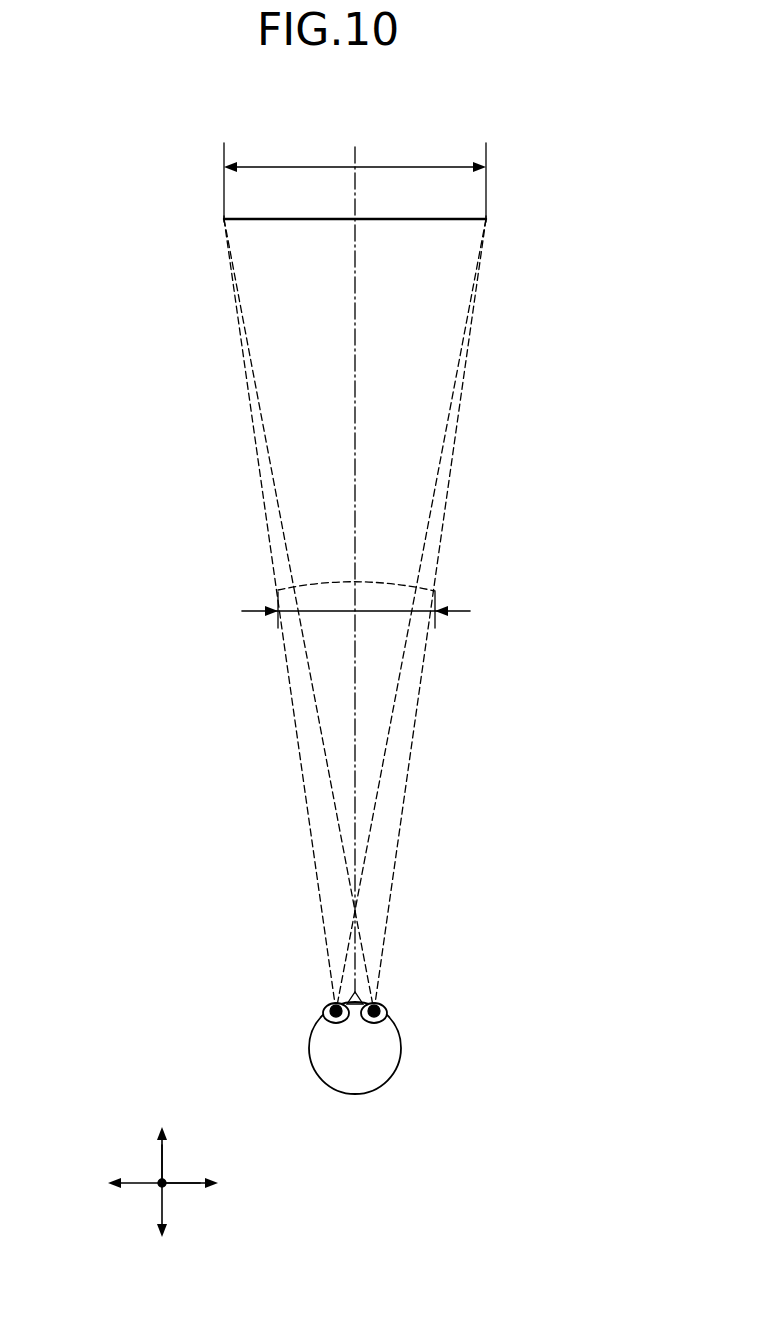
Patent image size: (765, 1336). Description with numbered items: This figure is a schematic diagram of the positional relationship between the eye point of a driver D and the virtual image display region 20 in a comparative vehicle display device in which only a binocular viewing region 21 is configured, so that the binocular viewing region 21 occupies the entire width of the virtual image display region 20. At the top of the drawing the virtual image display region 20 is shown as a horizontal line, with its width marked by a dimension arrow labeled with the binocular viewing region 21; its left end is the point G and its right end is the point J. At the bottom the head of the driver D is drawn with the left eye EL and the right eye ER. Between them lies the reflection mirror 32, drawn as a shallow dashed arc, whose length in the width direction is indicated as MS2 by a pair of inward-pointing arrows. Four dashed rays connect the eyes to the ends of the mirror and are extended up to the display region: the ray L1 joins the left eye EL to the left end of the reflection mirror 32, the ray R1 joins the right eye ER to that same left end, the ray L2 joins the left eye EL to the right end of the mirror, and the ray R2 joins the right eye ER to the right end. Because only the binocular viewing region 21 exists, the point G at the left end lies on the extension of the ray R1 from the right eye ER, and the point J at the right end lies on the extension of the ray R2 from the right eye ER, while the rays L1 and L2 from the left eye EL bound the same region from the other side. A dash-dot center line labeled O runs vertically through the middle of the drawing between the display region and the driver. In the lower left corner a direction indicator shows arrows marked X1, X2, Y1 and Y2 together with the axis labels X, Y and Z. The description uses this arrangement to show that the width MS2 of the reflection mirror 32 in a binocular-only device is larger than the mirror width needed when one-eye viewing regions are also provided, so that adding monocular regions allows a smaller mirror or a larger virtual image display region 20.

The binocular viewing region 21 is at (413, 165).
The virtual image display region 20 is at (279, 236).
The left end point of virtual image display region G is at (224, 219).
The right end point of binocular viewing region J is at (486, 219).
The ray L1 is at (257, 447).
The ray R1 is at (252, 386).
The ray L2 is at (443, 448).
The ray R2 is at (461, 386).
The optical axis O is at (354, 500).
The reflection mirror 32 is at (387, 580).
The length of reflection mirror in width direction MS2 is at (387, 611).
The driver D is at (310, 1063).
The left eye EL is at (327, 1002).
The right eye ER is at (383, 1002).
The X1 direction X1 is at (118, 1183).
The X2 direction X2 is at (206, 1183).
The Y1 direction Y1 is at (162, 1142).
The Y2 direction Y2 is at (162, 1225).
The X axis X is at (182, 1186).
The Y axis Y is at (165, 1155).
The Z axis Z is at (158, 1190).